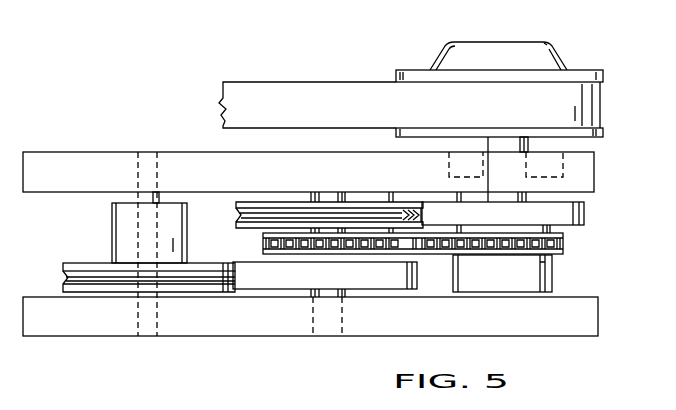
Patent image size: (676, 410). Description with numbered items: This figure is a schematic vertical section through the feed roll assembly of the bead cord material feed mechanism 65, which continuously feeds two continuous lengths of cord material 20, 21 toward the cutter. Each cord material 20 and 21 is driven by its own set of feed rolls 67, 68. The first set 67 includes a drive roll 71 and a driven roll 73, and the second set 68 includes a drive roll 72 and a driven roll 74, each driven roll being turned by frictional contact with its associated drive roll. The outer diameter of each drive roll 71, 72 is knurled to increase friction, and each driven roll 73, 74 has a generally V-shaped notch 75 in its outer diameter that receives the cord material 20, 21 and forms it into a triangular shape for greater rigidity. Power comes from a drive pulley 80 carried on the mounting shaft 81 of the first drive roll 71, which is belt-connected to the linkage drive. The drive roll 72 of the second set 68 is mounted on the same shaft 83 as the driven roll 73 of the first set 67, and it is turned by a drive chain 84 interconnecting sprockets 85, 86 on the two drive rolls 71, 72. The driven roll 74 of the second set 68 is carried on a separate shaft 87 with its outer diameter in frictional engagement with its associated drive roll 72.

The cord material 20 is at (429, 200).
The cord material 21 is at (236, 274).
The bead cord material feed mechanism 65 is at (256, 70).
The set of feed rolls 67 is at (377, 188).
The set of feed rolls 68 is at (215, 305).
The drive roll 71 is at (608, 203).
The drive roll 72 is at (366, 275).
The driven roll 73 is at (257, 203).
The driven roll 74 is at (85, 265).
The notch 75 is at (65, 280).
The drive pulley 80 is at (581, 68).
The mounting shaft 81 is at (528, 142).
The shaft 83 is at (328, 292).
The drive chain 84 is at (547, 267).
The sprocket 85 is at (522, 256).
The sprocket 86 is at (303, 250).
The shaft 87 is at (143, 200).